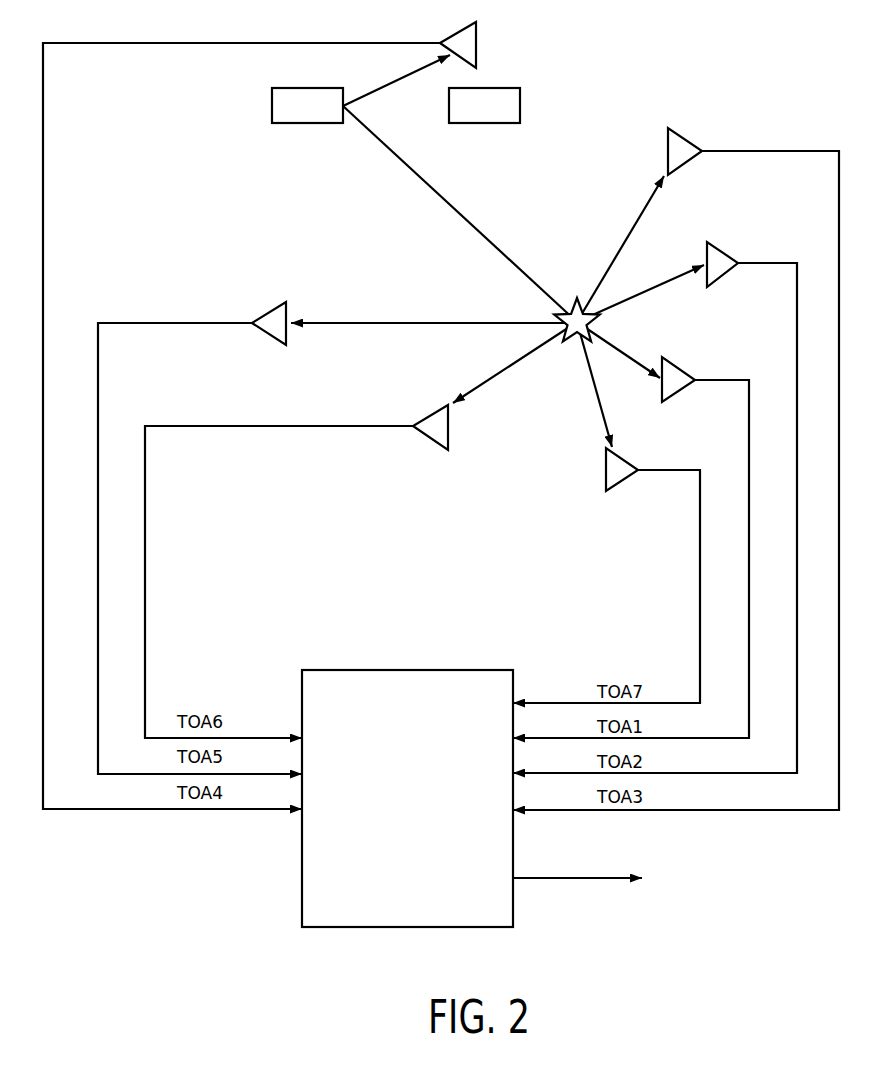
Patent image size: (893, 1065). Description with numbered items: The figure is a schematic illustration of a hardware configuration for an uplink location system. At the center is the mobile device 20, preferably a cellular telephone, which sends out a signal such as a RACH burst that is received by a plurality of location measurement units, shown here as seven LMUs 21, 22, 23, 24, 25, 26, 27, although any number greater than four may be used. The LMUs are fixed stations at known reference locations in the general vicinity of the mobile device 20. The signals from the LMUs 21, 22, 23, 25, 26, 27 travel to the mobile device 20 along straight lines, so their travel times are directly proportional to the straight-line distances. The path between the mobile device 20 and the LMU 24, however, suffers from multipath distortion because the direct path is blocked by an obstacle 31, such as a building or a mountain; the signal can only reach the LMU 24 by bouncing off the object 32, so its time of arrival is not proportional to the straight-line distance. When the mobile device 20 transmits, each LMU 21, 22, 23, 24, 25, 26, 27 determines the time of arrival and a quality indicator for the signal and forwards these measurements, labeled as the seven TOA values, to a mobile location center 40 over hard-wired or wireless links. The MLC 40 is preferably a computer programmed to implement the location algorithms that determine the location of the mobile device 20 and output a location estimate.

The mobile device 20 is at (556, 313).
The LMU 21 is at (664, 358).
The LMU 22 is at (710, 243).
The LMU 23 is at (671, 128).
The LMU 24 is at (479, 27).
The LMU 25 is at (289, 345).
The LMU 26 is at (450, 449).
The LMU 27 is at (603, 457).
The obstacle 31 is at (523, 104).
The object 32 is at (270, 100).
The mobile location center (MLC) 40 is at (298, 873).